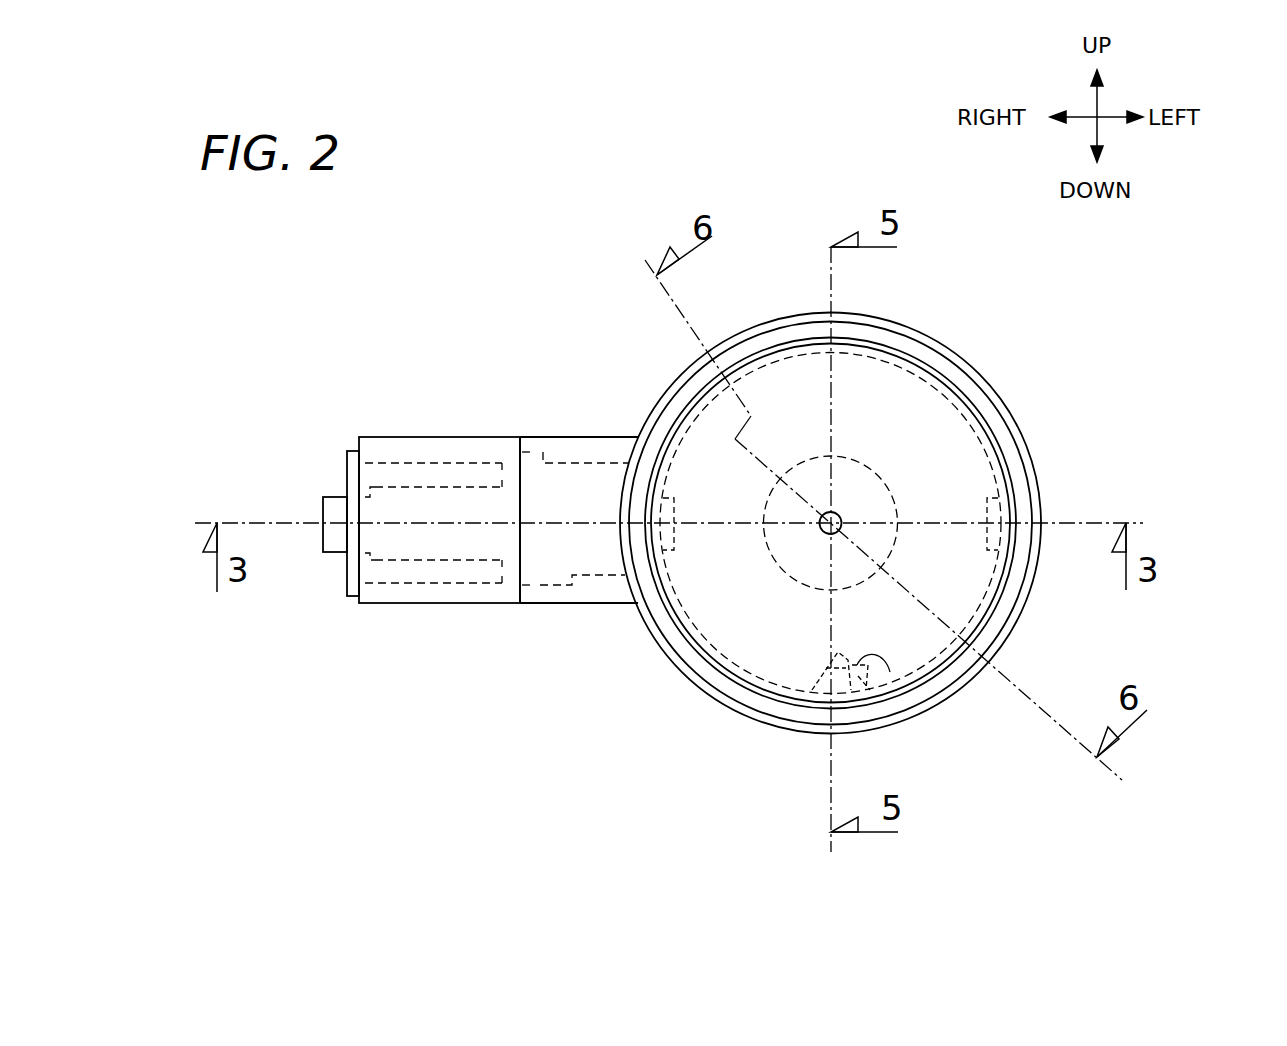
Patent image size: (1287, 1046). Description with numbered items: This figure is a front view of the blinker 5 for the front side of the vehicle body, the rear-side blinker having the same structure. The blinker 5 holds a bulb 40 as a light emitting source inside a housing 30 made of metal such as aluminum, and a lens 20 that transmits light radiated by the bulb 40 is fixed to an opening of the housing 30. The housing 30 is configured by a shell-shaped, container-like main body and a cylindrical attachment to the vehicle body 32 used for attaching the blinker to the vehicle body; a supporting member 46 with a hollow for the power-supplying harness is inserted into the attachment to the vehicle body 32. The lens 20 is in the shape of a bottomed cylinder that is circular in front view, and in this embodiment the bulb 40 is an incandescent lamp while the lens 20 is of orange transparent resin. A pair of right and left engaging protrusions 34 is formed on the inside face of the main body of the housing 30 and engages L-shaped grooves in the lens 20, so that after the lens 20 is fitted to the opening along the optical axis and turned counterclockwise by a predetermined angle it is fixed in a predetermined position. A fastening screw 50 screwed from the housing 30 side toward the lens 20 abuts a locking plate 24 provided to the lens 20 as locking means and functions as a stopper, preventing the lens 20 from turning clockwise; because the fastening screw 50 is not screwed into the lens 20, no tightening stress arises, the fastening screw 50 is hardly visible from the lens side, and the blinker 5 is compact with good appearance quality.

The blinker 5 is at (560, 188).
The lens 20 is at (777, 663).
The locking plate 24 is at (890, 672).
The housing 30 is at (590, 437).
The attachment to the vehicle body 32 is at (441, 452).
The engaging protrusion 34 is at (674, 529).
The bulb 40 is at (879, 478).
The supporting member 46 is at (547, 588).
The fastening screw 50 is at (806, 688).